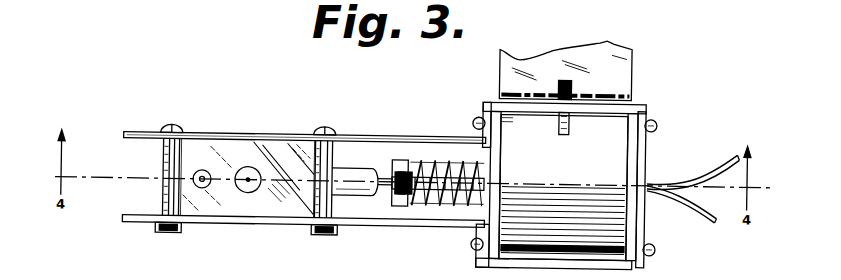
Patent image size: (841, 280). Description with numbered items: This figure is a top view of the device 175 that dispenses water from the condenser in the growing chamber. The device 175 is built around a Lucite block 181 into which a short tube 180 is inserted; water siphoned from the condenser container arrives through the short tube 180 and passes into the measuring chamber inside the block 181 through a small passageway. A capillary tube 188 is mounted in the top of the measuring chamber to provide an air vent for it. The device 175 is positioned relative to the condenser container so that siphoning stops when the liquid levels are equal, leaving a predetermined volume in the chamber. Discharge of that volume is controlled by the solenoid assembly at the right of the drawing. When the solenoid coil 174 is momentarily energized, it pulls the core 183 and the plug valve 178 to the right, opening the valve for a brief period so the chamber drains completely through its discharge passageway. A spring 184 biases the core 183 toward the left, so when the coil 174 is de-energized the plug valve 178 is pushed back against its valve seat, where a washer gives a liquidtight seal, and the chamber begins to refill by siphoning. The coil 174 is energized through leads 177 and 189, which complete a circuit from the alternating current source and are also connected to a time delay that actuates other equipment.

The solenoid coil 174 is at (576, 163).
The device 175 is at (362, 226).
The lead 177 is at (693, 181).
The plug valve 178 is at (342, 171).
The short tube 180 is at (196, 176).
The Lucite block 181 is at (203, 214).
The core 183 is at (428, 212).
The spring 184 is at (433, 160).
The capillary tube 188 is at (257, 171).
The lead 189 is at (687, 211).